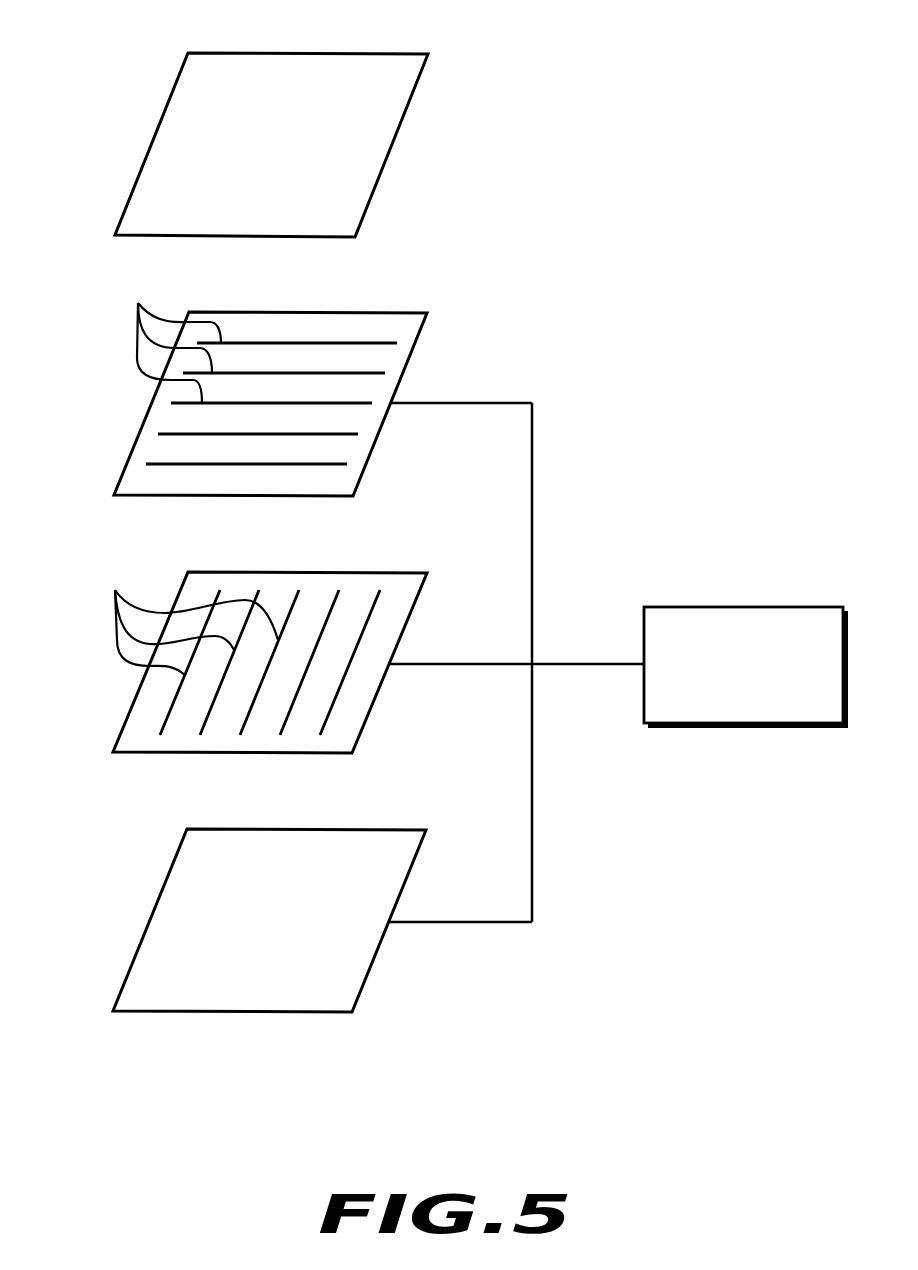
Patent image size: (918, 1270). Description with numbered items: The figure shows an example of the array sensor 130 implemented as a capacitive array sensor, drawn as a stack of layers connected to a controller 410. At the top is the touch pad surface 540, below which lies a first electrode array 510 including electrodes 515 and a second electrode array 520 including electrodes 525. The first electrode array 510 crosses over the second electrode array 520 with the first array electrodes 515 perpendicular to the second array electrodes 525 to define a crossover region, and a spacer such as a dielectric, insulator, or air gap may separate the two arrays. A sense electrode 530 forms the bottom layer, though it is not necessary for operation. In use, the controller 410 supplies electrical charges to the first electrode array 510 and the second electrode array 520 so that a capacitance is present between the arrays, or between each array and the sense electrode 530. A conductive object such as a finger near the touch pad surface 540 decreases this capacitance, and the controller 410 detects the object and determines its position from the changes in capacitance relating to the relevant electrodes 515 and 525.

The array sensor 130 is at (704, 100).
The touch pad surface 540 is at (150, 144).
The electrodes 515 is at (167, 332).
The first electrode array 510 is at (232, 378).
The electrodes 525 is at (180, 609).
The second electrode array 520 is at (231, 648).
The sense electrode 530 is at (150, 920).
The controller 410 is at (745, 606).